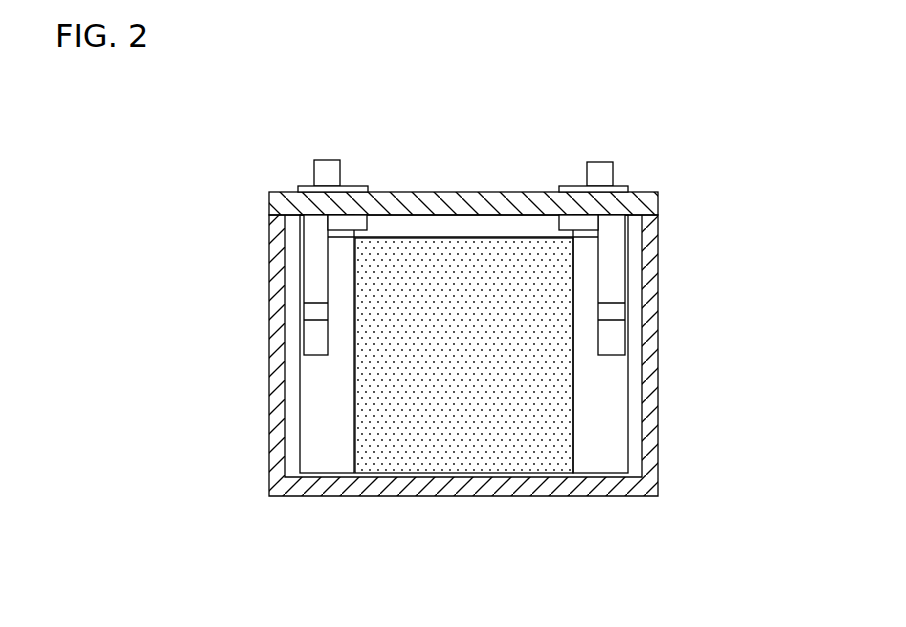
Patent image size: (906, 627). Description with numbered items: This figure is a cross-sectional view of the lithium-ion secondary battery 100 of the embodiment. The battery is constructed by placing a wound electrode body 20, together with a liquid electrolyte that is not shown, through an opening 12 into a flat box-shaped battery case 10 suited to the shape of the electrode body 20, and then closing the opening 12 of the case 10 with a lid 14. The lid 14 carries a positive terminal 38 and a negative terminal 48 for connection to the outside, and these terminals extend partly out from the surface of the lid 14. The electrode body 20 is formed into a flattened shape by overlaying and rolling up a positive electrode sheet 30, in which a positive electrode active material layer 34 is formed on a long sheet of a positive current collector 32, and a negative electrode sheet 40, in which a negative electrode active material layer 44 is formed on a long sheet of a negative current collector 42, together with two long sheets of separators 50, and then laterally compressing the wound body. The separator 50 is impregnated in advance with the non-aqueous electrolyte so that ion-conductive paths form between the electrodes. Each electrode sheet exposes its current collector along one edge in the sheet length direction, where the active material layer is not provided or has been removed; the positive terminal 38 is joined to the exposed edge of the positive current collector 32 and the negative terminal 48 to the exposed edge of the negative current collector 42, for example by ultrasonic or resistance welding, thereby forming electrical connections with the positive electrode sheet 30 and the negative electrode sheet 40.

The lithium-ion secondary battery 100 is at (241, 84).
The battery case 10 is at (668, 443).
The opening 12 is at (446, 228).
The lid 14 is at (405, 193).
The wound electrode body 20 is at (484, 236).
The positive electrode sheet 30 is at (340, 382).
The positive current collector 32 is at (330, 463).
The positive electrode active material layer 34 is at (411, 440).
The positive terminal 38 is at (322, 167).
The negative electrode sheet 40 is at (608, 381).
The negative current collector 42 is at (595, 463).
The negative electrode active material layer 44 is at (542, 440).
The negative terminal 48 is at (602, 165).
The separator 50 is at (478, 455).